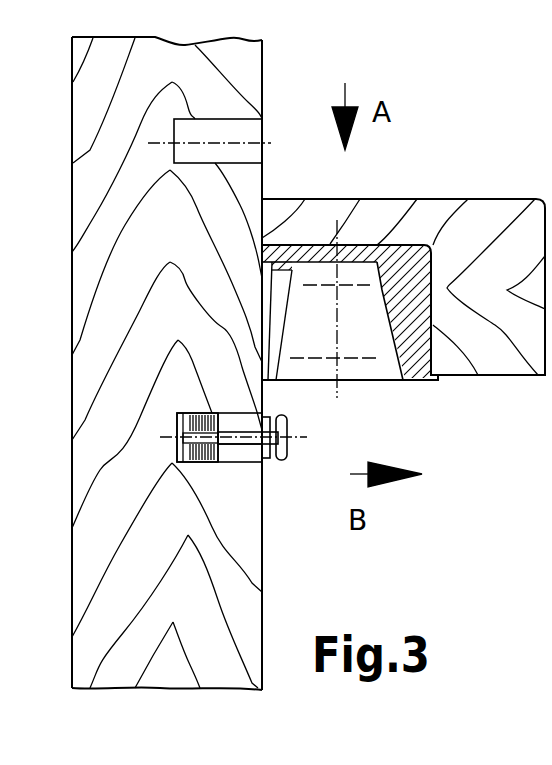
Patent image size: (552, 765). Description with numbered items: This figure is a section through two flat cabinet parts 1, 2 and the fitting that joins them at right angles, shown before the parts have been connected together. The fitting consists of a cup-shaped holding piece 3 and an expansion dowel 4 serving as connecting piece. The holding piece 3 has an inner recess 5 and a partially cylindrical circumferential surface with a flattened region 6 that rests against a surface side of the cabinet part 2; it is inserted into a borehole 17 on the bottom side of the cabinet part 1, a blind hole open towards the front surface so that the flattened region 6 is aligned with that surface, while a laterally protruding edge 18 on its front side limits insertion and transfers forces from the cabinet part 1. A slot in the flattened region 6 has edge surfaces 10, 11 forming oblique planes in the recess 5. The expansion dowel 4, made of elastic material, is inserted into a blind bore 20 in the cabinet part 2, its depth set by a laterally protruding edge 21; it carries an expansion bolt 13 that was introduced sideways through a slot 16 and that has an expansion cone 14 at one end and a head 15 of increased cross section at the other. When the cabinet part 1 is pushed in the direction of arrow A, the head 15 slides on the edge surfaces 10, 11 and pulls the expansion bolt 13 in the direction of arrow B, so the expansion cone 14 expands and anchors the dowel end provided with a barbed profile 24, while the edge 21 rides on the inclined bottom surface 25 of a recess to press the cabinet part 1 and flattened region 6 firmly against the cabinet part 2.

The cabinet part 1 is at (508, 360).
The cabinet part 2 is at (90, 101).
The holding piece 3 is at (432, 279).
The expansion dowel 4 is at (237, 455).
The inner recess 5 is at (366, 272).
The flattened region 6 is at (262, 253).
The edge surface 10 is at (334, 309).
The edge surface 11 is at (289, 308).
The expansion bolt 13 is at (233, 456).
The expansion cone 14 is at (153, 418).
The head 15 is at (290, 420).
The slot 16 is at (253, 446).
The borehole 17 is at (313, 245).
The laterally protruding edge 18 is at (438, 381).
The bore 20 is at (233, 128).
The laterally protruding edge 21 is at (267, 455).
The barbed profile 24 is at (186, 417).
The bottom surface 25 is at (265, 284).